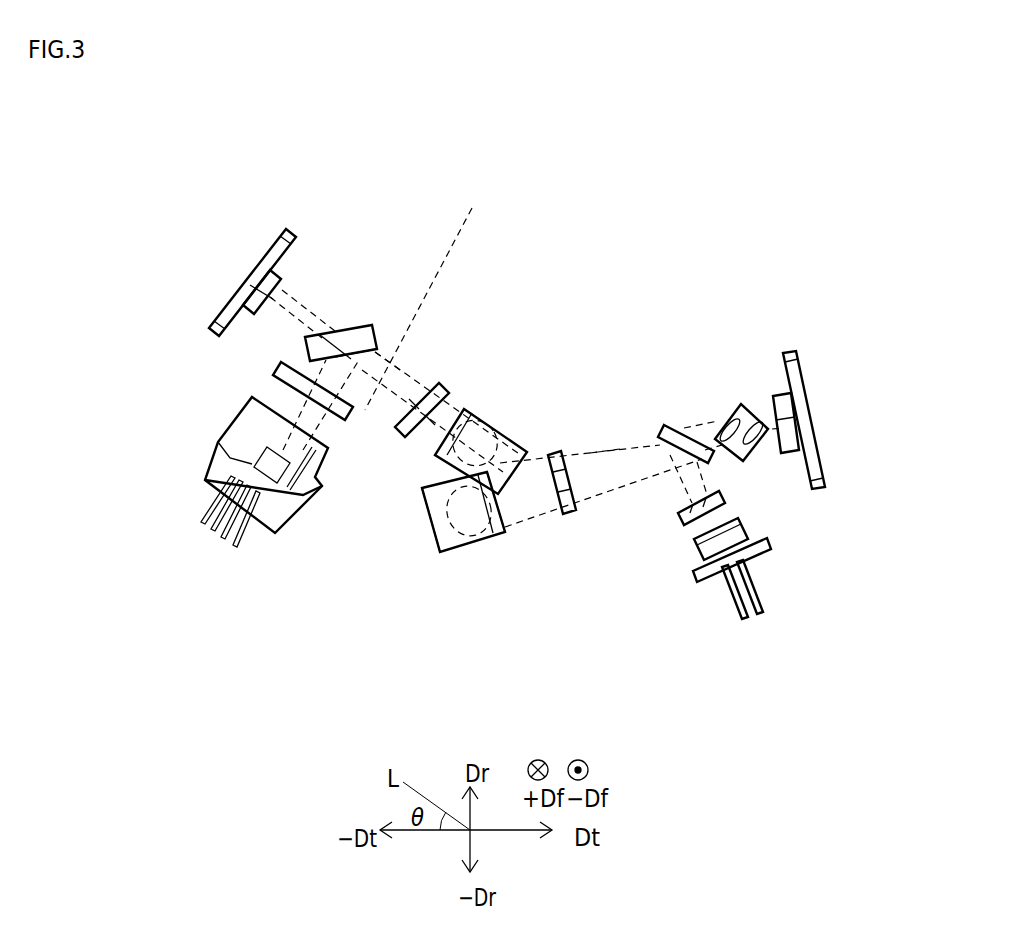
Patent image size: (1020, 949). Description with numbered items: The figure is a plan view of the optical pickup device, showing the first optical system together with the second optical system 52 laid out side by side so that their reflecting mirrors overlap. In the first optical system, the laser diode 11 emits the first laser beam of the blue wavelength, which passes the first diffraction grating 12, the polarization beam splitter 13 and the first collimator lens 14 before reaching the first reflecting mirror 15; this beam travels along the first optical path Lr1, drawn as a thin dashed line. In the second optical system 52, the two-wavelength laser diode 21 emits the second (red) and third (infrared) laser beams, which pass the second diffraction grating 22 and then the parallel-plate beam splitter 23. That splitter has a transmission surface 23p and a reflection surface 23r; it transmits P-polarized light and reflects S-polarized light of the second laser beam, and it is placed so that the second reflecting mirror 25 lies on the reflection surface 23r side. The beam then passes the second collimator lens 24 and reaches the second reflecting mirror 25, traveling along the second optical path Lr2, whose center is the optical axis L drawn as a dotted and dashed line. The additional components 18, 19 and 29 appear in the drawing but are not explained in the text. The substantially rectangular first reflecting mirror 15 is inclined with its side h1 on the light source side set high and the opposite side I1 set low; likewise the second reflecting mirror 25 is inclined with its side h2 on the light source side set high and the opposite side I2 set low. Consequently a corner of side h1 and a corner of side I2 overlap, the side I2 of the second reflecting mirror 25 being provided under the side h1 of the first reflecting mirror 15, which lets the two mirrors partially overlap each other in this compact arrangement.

The laser diode 11 is at (767, 541).
The first diffraction grating 12 is at (679, 516).
The polarization beam splitter 13 is at (680, 434).
The first collimator lens 14 is at (571, 514).
The first reflecting mirror 15 is at (455, 547).
The lens unit 18 is at (740, 406).
The light receiving element 19 is at (787, 410).
The two-wavelength laser diode 21 is at (317, 490).
The second diffraction grating 22 is at (280, 367).
The parallel-plate beam splitter 23 is at (372, 318).
The transmission surface 23p is at (343, 326).
The reflection surface 23r is at (350, 358).
The second collimator lens 24 is at (428, 385).
The second reflecting mirror 25 is at (507, 430).
The photodetector 29 is at (283, 268).
The second optical system 52 is at (650, 211).
The optical axis L is at (419, 291).
The first optical path Lr1 is at (600, 452).
The second optical path Lr2 is at (415, 378).
The side of first reflecting mirror on light source side h1 is at (485, 524).
The side of second reflecting mirror on light source side h2 is at (477, 417).
The other side of first reflecting mirror I1 is at (426, 500).
The other side of second reflecting mirror I2 is at (505, 492).